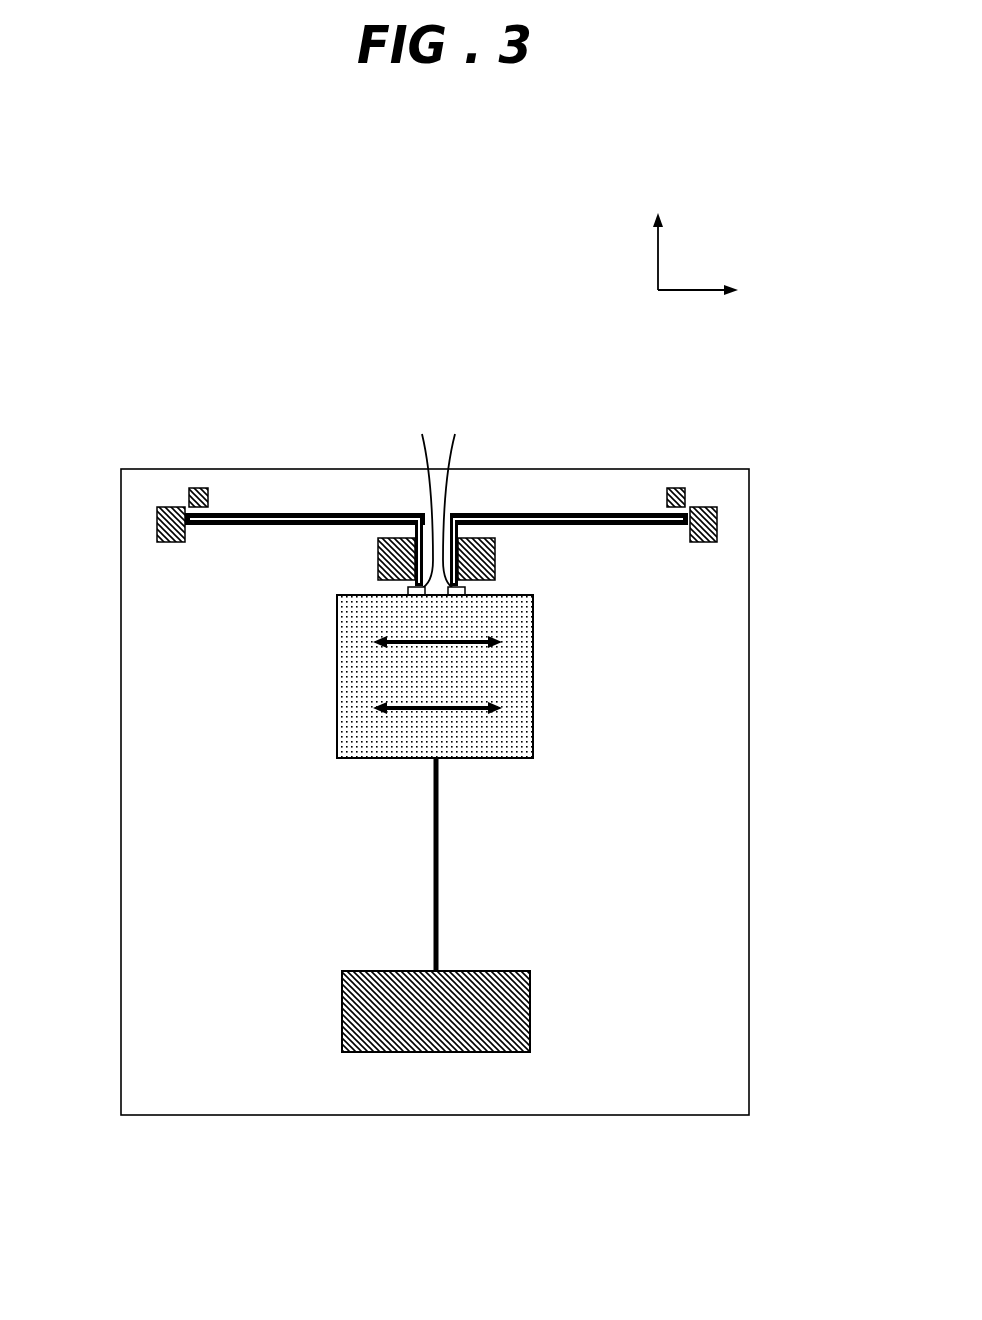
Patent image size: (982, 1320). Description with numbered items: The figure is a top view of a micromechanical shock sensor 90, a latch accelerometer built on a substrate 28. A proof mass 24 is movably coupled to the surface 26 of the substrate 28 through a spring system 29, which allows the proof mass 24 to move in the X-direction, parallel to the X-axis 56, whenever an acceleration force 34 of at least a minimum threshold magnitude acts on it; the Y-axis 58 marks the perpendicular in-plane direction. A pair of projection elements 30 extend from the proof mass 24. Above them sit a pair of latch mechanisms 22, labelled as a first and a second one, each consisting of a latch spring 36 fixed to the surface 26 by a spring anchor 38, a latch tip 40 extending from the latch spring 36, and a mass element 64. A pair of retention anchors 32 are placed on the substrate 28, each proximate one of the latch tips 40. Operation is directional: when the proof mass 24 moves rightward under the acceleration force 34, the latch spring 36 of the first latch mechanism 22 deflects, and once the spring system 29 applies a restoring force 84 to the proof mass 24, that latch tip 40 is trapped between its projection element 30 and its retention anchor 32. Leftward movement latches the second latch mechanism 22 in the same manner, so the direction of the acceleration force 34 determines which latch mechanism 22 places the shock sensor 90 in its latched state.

The micromechanical shock sensor 90 is at (237, 352).
The latch mechanism 22 is at (436, 449).
The latch spring 36 is at (318, 513).
The latch tip 40 is at (437, 499).
The mass element 64 is at (198, 488).
The spring anchor 38 is at (157, 521).
The retention anchor 32 is at (378, 545).
The projection element 30 is at (405, 594).
The proof mass 24 is at (520, 733).
The acceleration force 34 is at (398, 645).
The restoring force 84 is at (398, 712).
The spring system 29 is at (440, 850).
The substrate 28 is at (745, 967).
The surface 26 is at (738, 1105).
The X-axis 56 is at (685, 290).
The Y-axis 58 is at (658, 238).